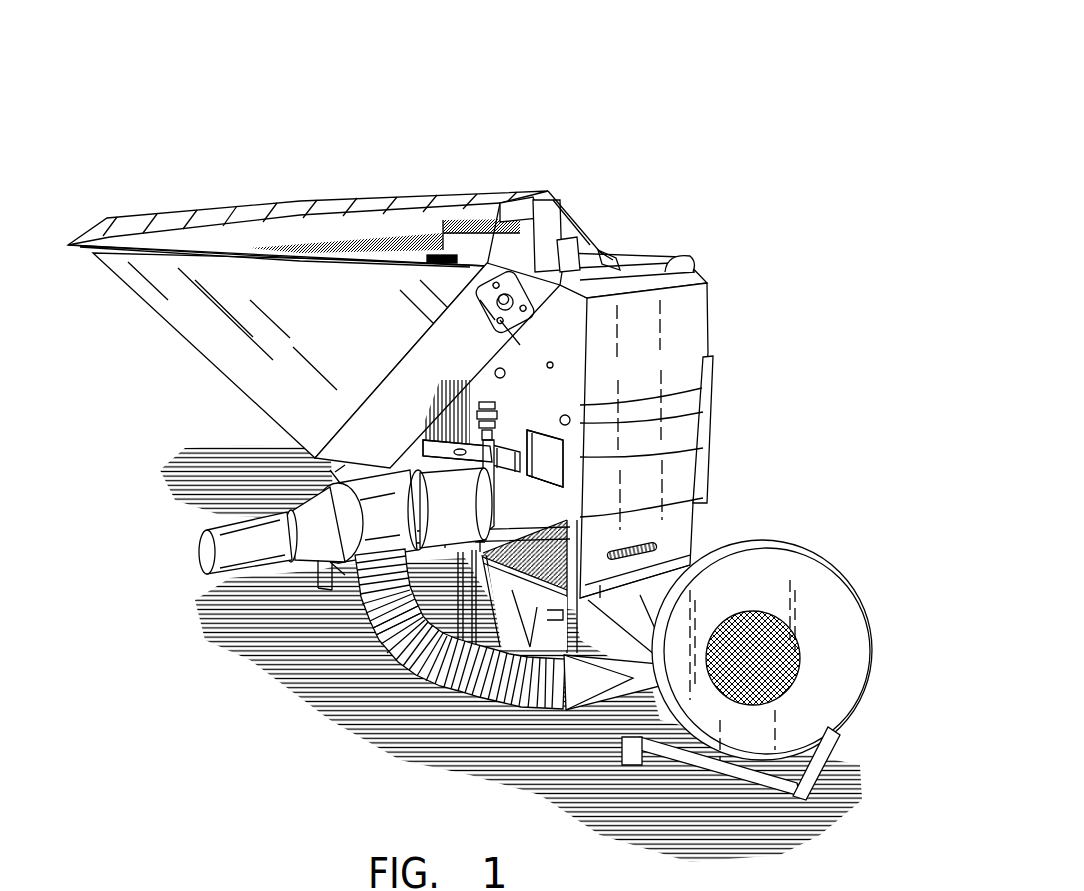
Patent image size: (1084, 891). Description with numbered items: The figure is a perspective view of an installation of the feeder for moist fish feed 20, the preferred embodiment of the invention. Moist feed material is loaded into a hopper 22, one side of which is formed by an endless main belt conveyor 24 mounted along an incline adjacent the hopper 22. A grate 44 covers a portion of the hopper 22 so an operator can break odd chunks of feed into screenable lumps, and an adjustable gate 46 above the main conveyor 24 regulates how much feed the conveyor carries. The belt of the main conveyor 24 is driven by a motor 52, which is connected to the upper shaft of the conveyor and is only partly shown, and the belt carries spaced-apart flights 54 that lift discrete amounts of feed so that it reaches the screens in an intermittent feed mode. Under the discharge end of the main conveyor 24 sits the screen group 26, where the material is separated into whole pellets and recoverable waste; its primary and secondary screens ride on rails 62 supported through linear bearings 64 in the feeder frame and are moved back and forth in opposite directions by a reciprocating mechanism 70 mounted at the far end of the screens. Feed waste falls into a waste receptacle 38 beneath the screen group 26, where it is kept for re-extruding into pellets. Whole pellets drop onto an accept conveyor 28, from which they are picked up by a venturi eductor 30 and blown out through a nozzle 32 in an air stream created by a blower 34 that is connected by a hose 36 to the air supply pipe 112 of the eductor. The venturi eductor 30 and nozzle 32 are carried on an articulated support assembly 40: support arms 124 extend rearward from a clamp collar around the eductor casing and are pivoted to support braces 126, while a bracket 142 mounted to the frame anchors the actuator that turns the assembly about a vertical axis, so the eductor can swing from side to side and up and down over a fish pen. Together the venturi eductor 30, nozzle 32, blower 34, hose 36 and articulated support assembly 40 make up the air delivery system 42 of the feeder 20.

The feeder for moist fish feed 20 is at (677, 47).
The hopper 22 is at (138, 297).
The endless main belt conveyor 24 is at (300, 422).
The screen group 26 is at (653, 173).
The accept conveyor 28 is at (468, 652).
The venturi eductor 30 is at (325, 588).
The nozzle 32 is at (198, 532).
The blower 34 is at (822, 562).
The hose 36 is at (383, 575).
The waste receptacle 38 is at (527, 605).
The articulated support assembly 40 is at (703, 498).
The air delivery system 42 is at (150, 430).
The grate 44 is at (223, 210).
The adjustable gate 46 is at (553, 198).
The motor 52 is at (663, 257).
The flights 54 is at (613, 253).
The rails 62 is at (703, 412).
The linear bearings 64 is at (545, 458).
The reciprocating mechanism 70 is at (702, 388).
The air supply pipe 112 is at (317, 600).
The support arms 124 is at (383, 672).
The support braces 126 is at (457, 451).
The bracket 142 is at (703, 448).